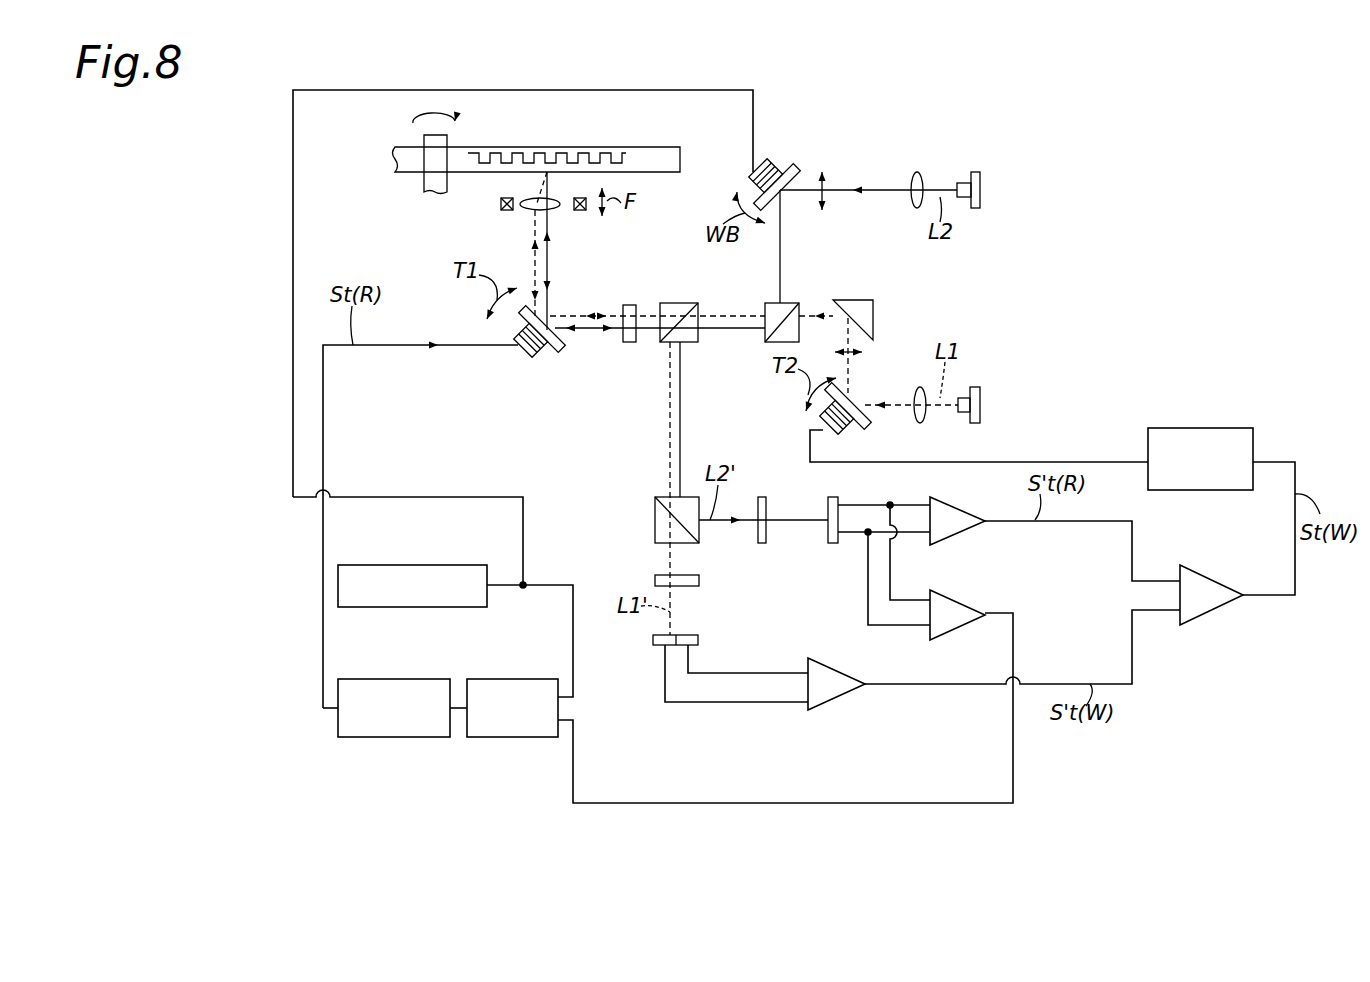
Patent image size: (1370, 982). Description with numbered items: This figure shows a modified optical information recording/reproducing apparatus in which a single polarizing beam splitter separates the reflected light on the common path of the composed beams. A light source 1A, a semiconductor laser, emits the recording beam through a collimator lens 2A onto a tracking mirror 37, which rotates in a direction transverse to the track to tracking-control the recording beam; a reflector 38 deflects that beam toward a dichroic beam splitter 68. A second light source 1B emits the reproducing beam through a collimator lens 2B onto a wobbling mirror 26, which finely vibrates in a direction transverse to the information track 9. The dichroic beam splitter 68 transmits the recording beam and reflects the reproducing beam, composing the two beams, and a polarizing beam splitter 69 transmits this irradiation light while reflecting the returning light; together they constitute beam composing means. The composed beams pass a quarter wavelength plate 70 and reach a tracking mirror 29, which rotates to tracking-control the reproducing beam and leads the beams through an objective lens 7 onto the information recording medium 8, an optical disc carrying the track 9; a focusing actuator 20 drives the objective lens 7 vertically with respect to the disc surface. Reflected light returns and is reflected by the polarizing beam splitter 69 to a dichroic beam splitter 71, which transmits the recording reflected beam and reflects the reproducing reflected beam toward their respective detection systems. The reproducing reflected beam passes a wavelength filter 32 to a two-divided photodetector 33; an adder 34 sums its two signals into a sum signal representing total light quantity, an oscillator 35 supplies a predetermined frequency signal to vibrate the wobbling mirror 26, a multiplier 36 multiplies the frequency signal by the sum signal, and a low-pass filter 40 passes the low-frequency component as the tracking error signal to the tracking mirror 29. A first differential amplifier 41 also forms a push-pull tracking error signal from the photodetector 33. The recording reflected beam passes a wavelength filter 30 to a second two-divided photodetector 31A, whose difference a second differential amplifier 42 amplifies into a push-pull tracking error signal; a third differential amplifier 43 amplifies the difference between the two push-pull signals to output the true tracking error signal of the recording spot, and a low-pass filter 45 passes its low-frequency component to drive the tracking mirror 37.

The information recording medium 8 is at (650, 147).
The information track 9 is at (547, 150).
The objective lens 7 is at (553, 208).
The focusing actuator 20 is at (583, 212).
The tracking mirror 29 is at (551, 348).
The wobbling mirror 26 is at (785, 165).
The collimator lens 2B is at (915, 172).
The light source 1B is at (962, 185).
The ¼ wavelength plate 70 is at (628, 305).
The polarizing beam splitter 69 is at (676, 303).
The dichroic beam splitter 68 is at (790, 303).
The reflector 38 is at (860, 300).
The collimator lens 2A is at (920, 387).
The light source 1A is at (975, 388).
The tracking mirror 37 is at (822, 426).
The low-pass filter 45 is at (1200, 428).
The dichroic beam splitter 71 is at (655, 518).
The wavelength filter 32 is at (762, 497).
The two-divided photodetector 33 is at (790, 520).
The first differential amplifier 41 is at (958, 512).
The adder 34 is at (955, 600).
The second differential amplifier 42 is at (830, 660).
The third differential amplifier 43 is at (1220, 580).
The wavelength filter 30 is at (700, 578).
The second two-divided photodetector 31A is at (700, 639).
The oscillator 35 is at (395, 565).
The low-pass filter 40 is at (383, 679).
The multiplier 36 is at (500, 679).